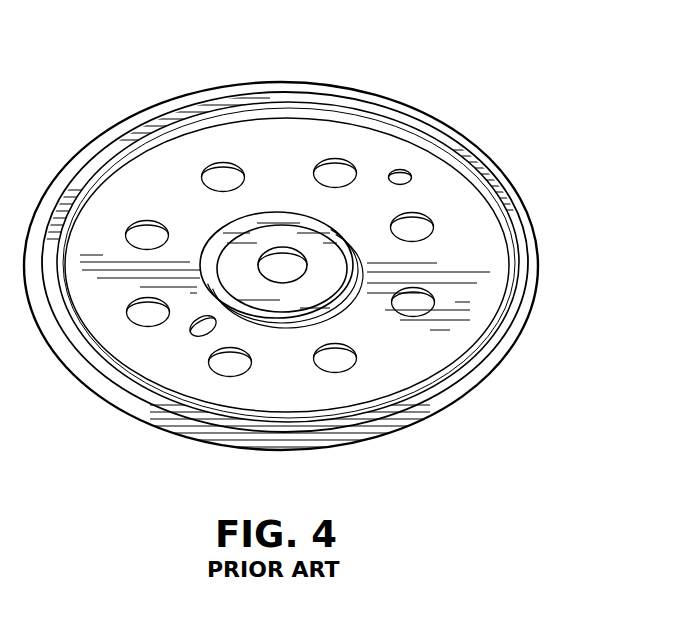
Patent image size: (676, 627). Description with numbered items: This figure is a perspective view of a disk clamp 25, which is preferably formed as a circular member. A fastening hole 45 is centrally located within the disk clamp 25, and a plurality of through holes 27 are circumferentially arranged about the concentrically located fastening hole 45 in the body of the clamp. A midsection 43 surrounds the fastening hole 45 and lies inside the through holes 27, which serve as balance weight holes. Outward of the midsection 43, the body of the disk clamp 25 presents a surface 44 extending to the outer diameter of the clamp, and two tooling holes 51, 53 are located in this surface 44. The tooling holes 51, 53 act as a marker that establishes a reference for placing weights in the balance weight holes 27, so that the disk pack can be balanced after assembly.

The disk clamp 25 is at (522, 200).
The through holes 27 is at (435, 302).
The midsection 43 is at (330, 237).
The surface 44 is at (330, 140).
The fastening hole 45 is at (282, 250).
The tooling hole 51 is at (408, 175).
The tooling hole 53 is at (195, 335).